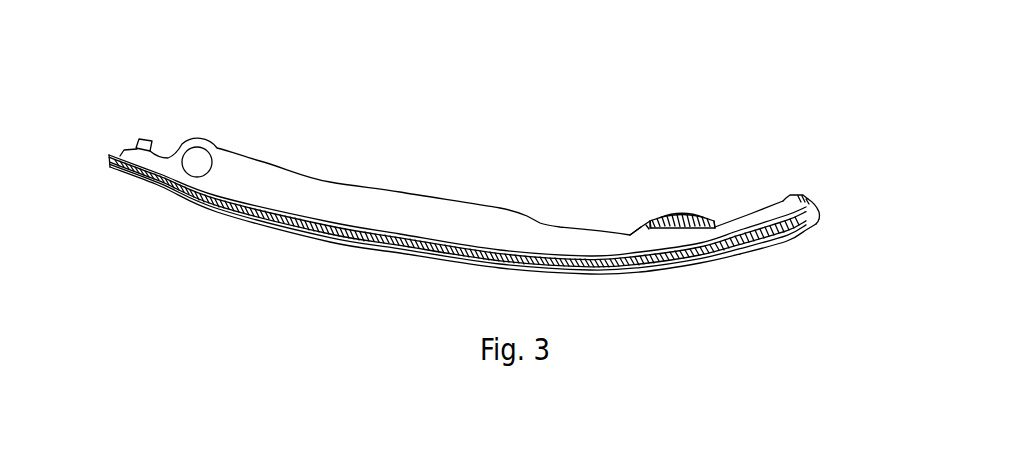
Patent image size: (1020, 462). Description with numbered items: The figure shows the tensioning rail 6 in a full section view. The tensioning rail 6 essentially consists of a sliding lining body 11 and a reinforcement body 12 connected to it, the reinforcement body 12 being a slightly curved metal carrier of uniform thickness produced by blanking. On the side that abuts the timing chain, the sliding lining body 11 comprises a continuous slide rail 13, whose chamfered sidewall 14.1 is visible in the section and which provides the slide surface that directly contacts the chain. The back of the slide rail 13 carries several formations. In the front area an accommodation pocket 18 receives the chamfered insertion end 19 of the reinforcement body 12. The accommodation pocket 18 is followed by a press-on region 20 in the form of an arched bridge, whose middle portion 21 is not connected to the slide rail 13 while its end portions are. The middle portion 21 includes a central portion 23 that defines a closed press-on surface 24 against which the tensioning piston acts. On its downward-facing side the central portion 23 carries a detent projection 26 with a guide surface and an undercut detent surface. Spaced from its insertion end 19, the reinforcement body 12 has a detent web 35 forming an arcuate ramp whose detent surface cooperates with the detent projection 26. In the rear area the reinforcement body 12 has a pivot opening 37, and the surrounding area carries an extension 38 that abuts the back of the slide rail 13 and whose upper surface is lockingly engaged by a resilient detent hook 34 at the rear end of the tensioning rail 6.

The tensioning rail 6 is at (705, 275).
The sliding lining body 11 is at (313, 240).
The reinforcement body 12 is at (406, 192).
The slide rail 13 is at (240, 218).
The chamfered sidewall 14.1 is at (158, 186).
The accommodation pocket 18 is at (808, 198).
The insertion end 19 is at (821, 216).
The press-on region 20 is at (652, 214).
The middle portion 21 is at (722, 209).
The central portion 23 is at (711, 215).
The press-on surface 24 is at (672, 216).
The detent projection 26 is at (637, 227).
The detent hook 34 is at (147, 139).
The detent web 35 is at (687, 214).
The pivot opening 37 is at (199, 161).
The extension 38 is at (125, 149).